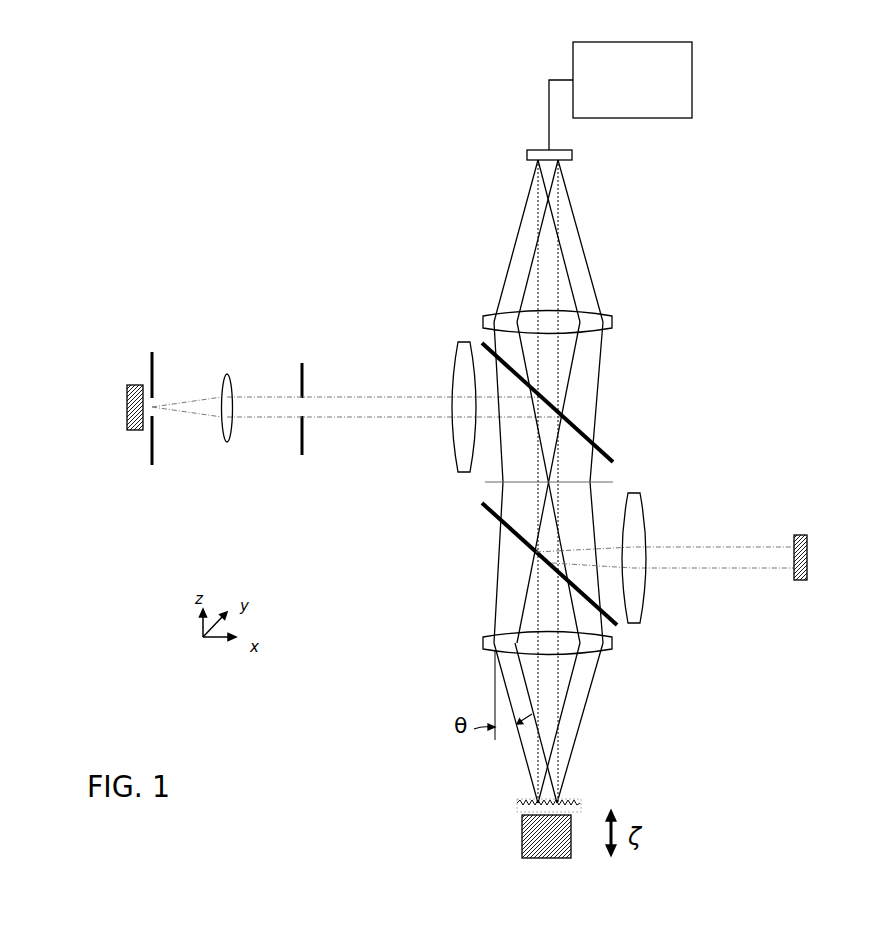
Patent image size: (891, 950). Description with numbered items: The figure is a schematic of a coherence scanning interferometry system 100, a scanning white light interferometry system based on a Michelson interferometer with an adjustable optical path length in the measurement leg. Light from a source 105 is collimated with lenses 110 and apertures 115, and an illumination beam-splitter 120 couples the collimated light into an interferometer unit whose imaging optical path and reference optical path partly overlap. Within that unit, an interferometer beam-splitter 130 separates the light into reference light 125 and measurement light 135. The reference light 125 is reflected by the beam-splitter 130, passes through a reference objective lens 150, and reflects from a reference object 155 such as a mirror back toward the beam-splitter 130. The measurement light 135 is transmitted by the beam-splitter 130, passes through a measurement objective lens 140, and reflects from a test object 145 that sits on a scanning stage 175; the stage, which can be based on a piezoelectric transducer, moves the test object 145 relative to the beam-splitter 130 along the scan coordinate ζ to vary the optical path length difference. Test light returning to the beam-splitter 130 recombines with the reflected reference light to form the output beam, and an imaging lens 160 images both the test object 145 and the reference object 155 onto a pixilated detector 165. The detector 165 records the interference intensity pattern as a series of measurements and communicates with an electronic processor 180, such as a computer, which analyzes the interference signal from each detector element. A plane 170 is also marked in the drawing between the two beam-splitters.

The coherence scanning interferometry system 100 is at (223, 137).
The source 105 is at (126, 407).
The lenses 110 is at (452, 438).
The apertures 115 is at (302, 363).
The illumination beam-splitter 120 is at (483, 343).
The reference light 125 is at (691, 584).
The interferometer beam-splitter 130 is at (617, 625).
The measurement light 135 is at (526, 575).
The measurement objective lens 140 is at (605, 652).
The test object 145 is at (517, 806).
The reference objective lens 150 is at (645, 525).
The reference object 155 is at (797, 582).
The imaging lens 160 is at (605, 318).
The detector 165 is at (528, 148).
The intermediate image plane 170 is at (485, 482).
The scanning stage 175 is at (522, 836).
The electronic processor 180 is at (620, 96).